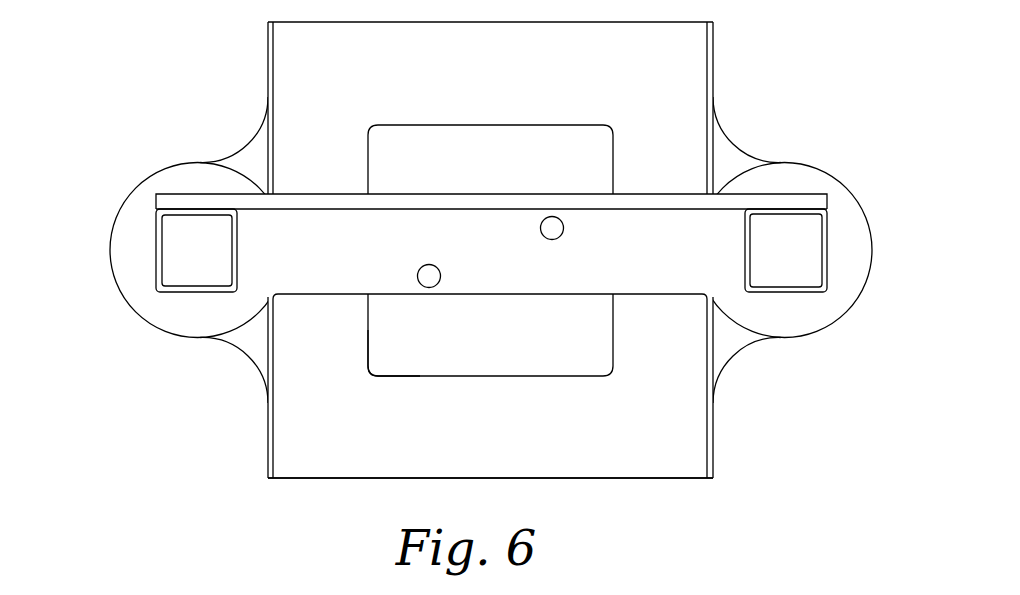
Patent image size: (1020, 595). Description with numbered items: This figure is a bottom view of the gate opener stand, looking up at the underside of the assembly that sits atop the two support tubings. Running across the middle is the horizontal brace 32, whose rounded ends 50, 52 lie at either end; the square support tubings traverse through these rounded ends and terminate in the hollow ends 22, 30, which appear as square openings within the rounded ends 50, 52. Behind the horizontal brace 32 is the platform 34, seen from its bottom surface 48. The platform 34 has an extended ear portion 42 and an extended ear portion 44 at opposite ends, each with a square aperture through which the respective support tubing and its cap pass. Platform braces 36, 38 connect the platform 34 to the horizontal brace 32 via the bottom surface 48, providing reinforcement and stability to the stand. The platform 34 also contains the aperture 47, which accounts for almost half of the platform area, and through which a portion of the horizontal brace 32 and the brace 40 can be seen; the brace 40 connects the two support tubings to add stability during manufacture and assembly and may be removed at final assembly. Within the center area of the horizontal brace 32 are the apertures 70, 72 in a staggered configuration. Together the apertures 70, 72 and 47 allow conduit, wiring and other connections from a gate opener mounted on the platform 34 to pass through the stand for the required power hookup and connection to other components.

The hollow end 22 is at (184, 266).
The hollow end 30 is at (772, 266).
The horizontal brace 32 is at (279, 282).
The platform 34 is at (333, 479).
The platform brace 36 is at (268, 87).
The platform brace 38 is at (713, 62).
The brace 40 is at (452, 193).
The extended ear portion 42 is at (222, 160).
The extended ear portion 44 is at (827, 172).
The aperture 47 is at (388, 350).
The bottom surface 48 is at (471, 439).
The rounded end 50 is at (122, 238).
The rounded end 52 is at (846, 282).
The aperture 70 is at (552, 240).
The aperture 72 is at (429, 264).